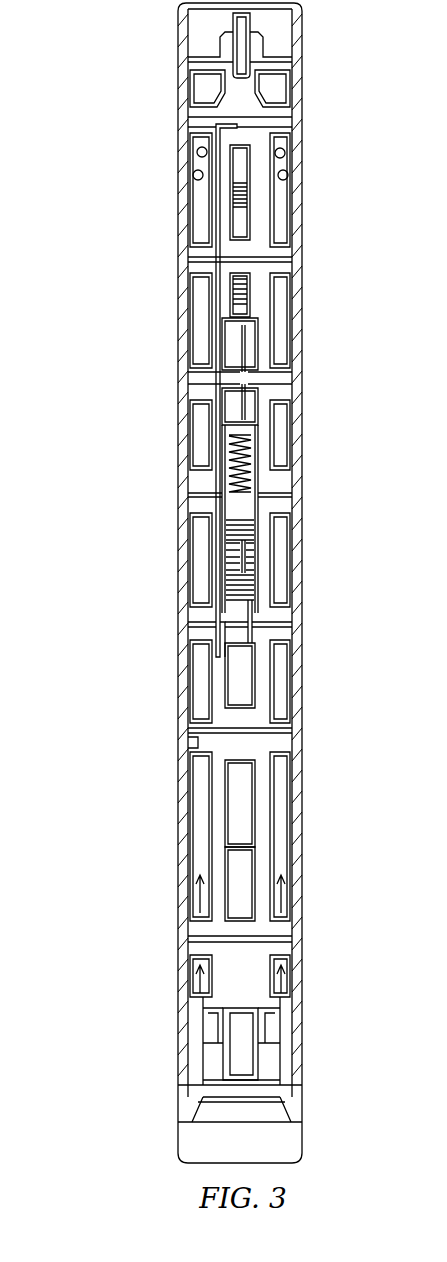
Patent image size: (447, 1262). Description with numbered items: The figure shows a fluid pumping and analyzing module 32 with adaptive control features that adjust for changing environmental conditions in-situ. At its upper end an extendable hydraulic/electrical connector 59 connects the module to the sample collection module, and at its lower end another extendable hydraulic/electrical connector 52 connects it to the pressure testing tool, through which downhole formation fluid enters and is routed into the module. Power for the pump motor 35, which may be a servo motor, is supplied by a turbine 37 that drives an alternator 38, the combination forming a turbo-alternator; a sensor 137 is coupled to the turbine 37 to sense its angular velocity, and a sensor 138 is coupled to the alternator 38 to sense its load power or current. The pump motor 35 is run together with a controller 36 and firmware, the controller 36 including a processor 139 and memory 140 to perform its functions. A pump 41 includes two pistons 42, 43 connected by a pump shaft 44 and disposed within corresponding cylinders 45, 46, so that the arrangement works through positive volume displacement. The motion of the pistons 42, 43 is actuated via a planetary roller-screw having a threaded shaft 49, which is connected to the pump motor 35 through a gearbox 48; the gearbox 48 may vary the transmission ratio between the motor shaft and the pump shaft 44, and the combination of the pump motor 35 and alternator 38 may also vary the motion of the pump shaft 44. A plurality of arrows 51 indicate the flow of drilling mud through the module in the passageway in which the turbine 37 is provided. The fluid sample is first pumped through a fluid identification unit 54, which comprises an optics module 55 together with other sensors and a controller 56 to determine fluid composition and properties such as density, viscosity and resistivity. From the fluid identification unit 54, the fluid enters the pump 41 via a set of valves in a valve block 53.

The fluid pumping and analyzing module 32 is at (90, 232).
The extendable hydraulic/electrical connector 59 is at (222, 48).
The sensor 137 is at (196, 174).
The turbine 37 is at (240, 153).
The sensor 138 is at (237, 183).
The alternator 38 is at (240, 232).
The processor 139 is at (243, 278).
The controller 36 is at (247, 278).
The memory 140 is at (243, 300).
The pump motor 35 is at (250, 352).
The gearbox 48 is at (247, 392).
The threaded shaft 49 is at (255, 443).
The piston 43 is at (258, 525).
The cylinder 46 is at (228, 550).
The pump 41 is at (255, 548).
The cylinder 45 is at (228, 572).
The pump shaft 44 is at (257, 568).
The piston 42 is at (237, 600).
The valve block 53 is at (240, 688).
The controller 56 is at (242, 785).
The optics module 55 is at (242, 862).
The fluid identification unit 54 is at (223, 835).
The arrows 51 is at (285, 897).
The extendable hydraulic/electrical connector 52 is at (237, 1055).